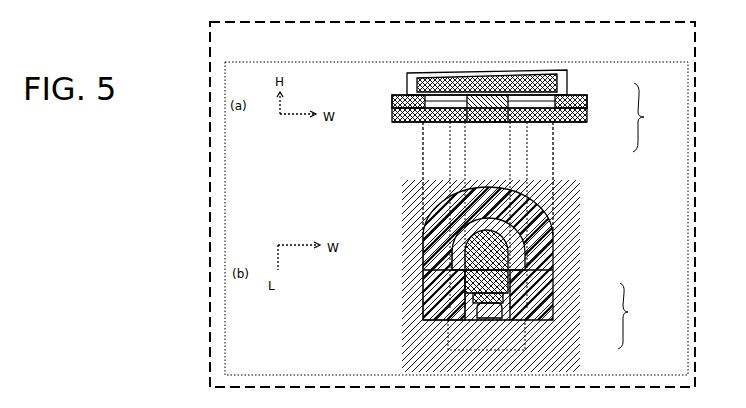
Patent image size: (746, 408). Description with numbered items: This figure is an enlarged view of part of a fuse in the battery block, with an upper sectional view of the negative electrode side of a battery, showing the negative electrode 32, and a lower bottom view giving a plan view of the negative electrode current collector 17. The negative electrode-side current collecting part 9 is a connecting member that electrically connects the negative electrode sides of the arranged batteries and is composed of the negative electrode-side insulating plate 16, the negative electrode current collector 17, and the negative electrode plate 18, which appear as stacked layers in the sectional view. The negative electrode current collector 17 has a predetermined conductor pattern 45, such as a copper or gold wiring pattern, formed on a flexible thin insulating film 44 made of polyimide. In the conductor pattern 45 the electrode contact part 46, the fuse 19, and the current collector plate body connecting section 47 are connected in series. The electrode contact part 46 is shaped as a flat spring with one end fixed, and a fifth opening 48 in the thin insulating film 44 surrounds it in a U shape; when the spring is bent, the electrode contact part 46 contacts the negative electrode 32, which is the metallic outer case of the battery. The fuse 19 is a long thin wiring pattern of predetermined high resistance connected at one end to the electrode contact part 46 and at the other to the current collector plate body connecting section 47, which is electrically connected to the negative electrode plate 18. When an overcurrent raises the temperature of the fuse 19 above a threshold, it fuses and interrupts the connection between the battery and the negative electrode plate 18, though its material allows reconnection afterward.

The negative electrode-side current collecting part 9 is at (643, 117).
The negative electrode-side insulating plate 16 is at (592, 99).
The negative electrode current collector 17 is at (592, 113).
The negative electrode plate 18 is at (556, 123).
The fuse 19 is at (505, 312).
The negative electrode 32 is at (575, 80).
The flexible thin insulating film 44 is at (540, 125).
The conductor pattern 45 is at (634, 316).
The electrode contact part 46 is at (485, 122).
The current collector plate body connecting section 47 is at (525, 340).
The fifth opening 48 is at (447, 124).